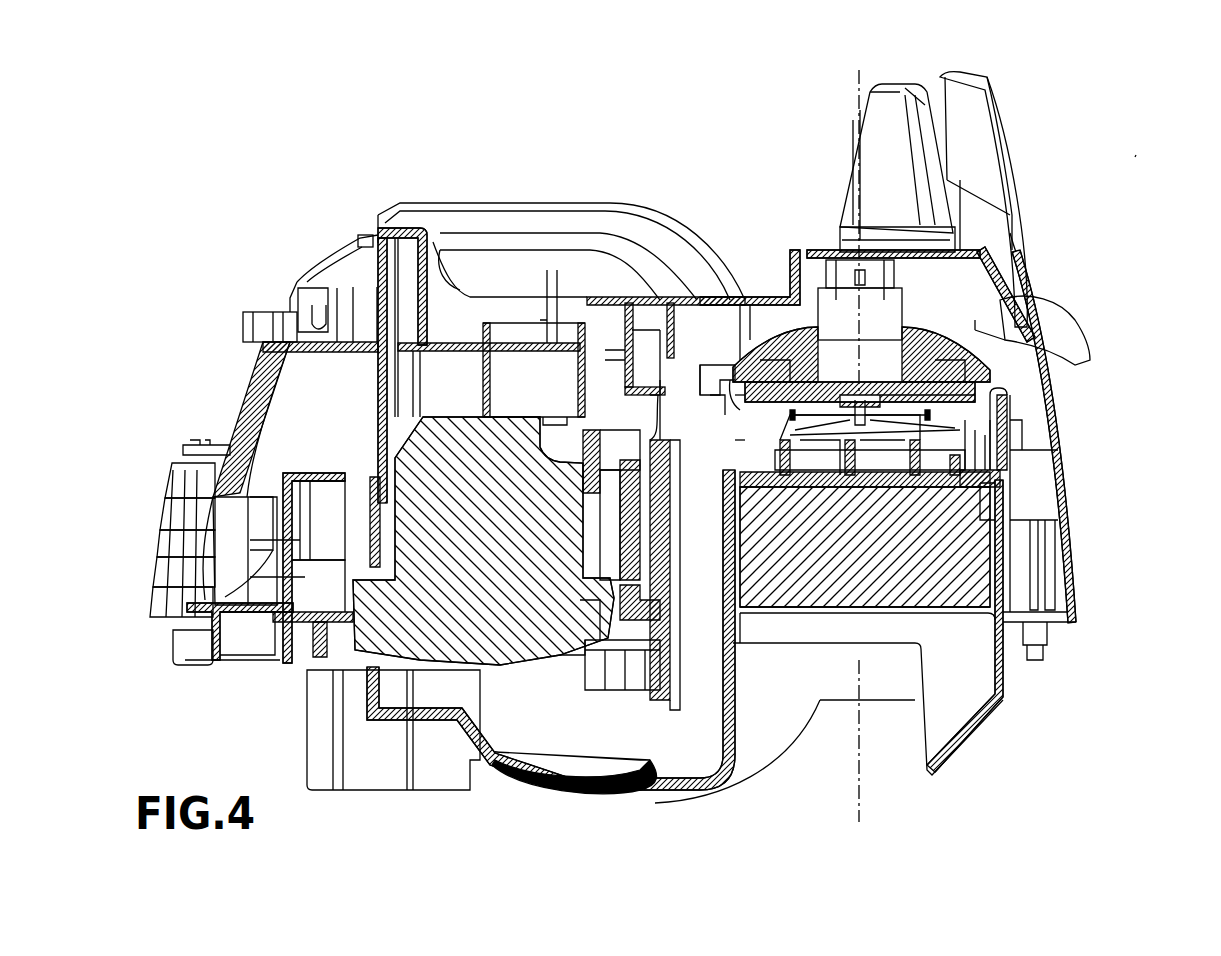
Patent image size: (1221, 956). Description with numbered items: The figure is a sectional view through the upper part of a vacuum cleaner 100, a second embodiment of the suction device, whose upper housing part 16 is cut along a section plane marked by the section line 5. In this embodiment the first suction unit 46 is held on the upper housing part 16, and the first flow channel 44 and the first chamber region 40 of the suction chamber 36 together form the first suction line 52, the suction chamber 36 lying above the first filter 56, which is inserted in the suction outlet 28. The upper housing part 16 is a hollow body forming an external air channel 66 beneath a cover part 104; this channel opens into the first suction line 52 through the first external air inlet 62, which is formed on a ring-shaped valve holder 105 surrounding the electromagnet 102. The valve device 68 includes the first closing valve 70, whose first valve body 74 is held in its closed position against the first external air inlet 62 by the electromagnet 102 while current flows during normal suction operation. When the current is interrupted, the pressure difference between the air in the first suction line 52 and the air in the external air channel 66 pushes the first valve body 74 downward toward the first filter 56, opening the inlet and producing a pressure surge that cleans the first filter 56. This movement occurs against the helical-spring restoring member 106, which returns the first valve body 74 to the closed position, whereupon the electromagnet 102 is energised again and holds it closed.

The section line 5- 5 is at (828, 808).
The upper housing part 16 is at (1068, 578).
The suction outlet 28 is at (975, 500).
The suction chamber 36 is at (962, 428).
The first chamber region 40 is at (975, 398).
The first flow channel 44 is at (548, 740).
The first suction unit 46 is at (489, 558).
The first suction line 52 is at (726, 362).
The first filter 56 is at (935, 588).
The first external air inlet 62 is at (985, 357).
The external air channel 66 is at (988, 304).
The valve device 68 is at (760, 410).
The first closing valve 70 is at (758, 431).
The first valve body 74 is at (812, 445).
The vacuum cleaner 100 is at (1135, 157).
The electromagnet 102 is at (830, 300).
The cover part 104 is at (1010, 290).
The valve holder 105 is at (785, 300).
The restoring member 106 is at (955, 458).